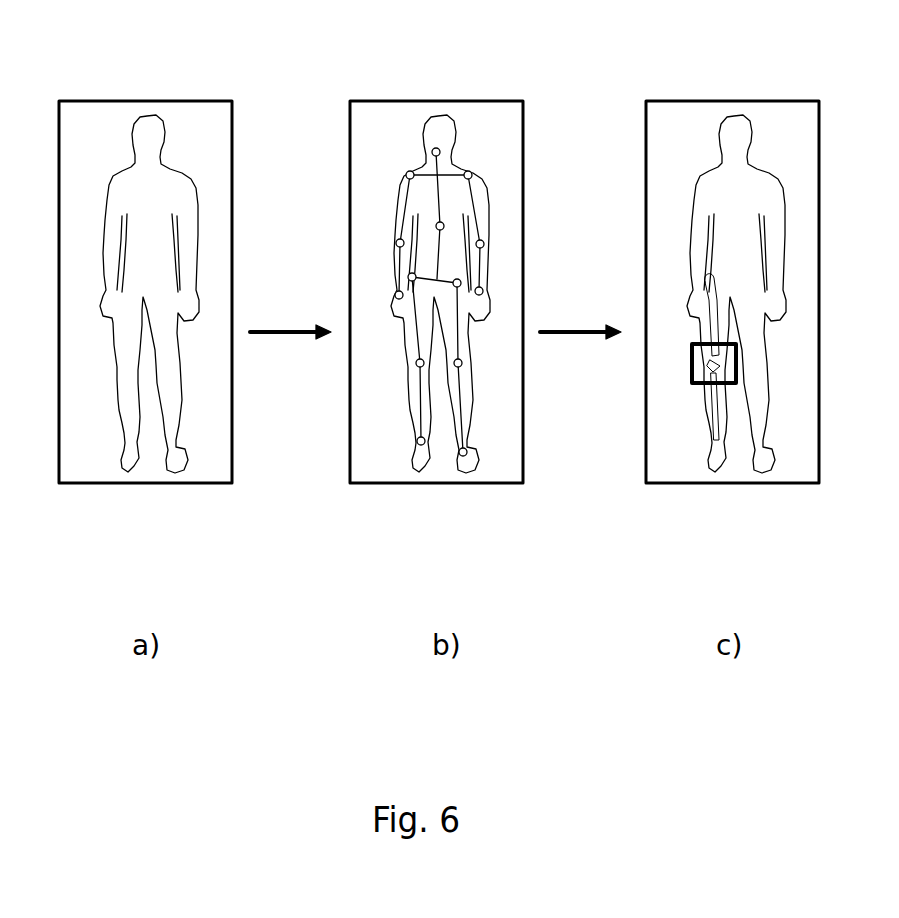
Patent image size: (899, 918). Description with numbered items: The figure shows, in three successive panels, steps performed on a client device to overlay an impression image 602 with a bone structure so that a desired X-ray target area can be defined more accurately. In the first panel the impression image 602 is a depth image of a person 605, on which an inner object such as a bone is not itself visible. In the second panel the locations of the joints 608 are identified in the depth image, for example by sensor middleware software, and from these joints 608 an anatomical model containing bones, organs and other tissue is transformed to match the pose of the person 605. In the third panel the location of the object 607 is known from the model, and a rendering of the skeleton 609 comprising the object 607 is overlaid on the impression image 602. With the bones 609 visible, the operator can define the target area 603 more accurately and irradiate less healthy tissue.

The impression image 602 is at (161, 101).
The person 605 is at (164, 138).
The joints 608 is at (462, 366).
The skeleton 609 is at (708, 299).
The object 607 is at (714, 360).
The target area 603 is at (713, 389).